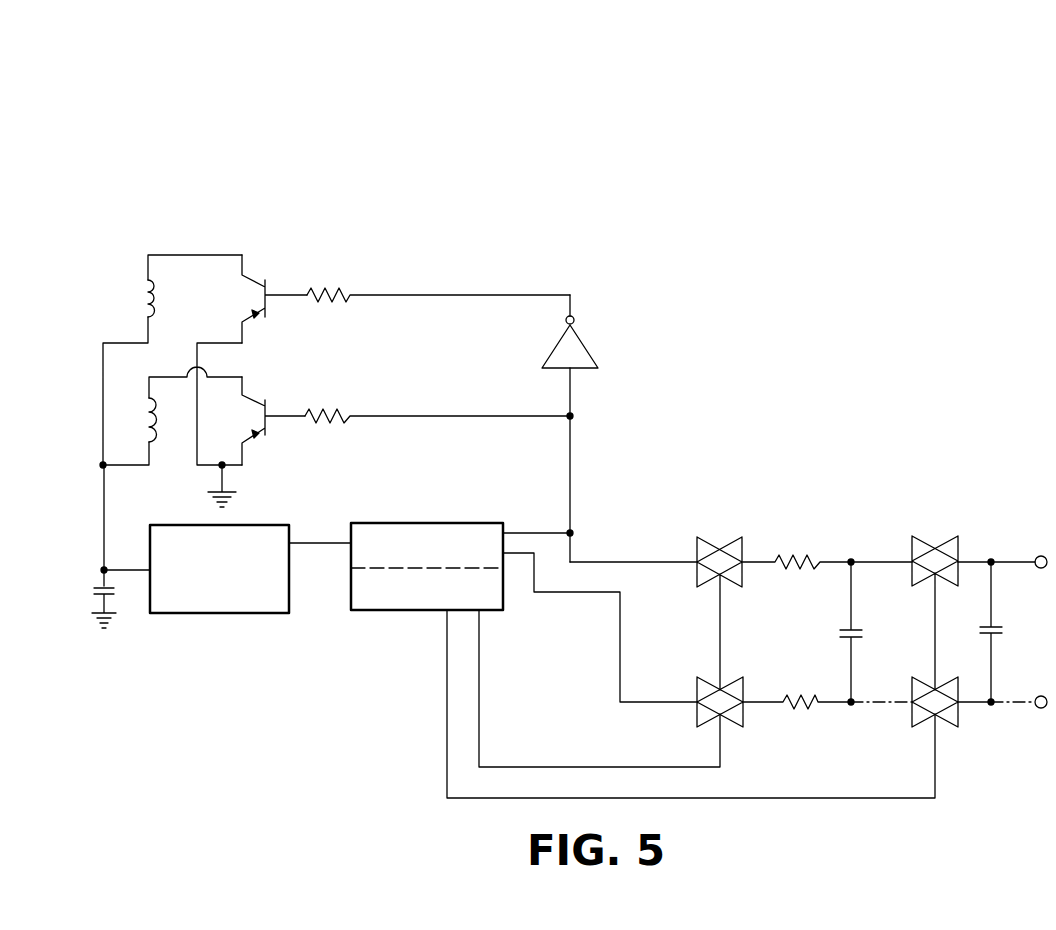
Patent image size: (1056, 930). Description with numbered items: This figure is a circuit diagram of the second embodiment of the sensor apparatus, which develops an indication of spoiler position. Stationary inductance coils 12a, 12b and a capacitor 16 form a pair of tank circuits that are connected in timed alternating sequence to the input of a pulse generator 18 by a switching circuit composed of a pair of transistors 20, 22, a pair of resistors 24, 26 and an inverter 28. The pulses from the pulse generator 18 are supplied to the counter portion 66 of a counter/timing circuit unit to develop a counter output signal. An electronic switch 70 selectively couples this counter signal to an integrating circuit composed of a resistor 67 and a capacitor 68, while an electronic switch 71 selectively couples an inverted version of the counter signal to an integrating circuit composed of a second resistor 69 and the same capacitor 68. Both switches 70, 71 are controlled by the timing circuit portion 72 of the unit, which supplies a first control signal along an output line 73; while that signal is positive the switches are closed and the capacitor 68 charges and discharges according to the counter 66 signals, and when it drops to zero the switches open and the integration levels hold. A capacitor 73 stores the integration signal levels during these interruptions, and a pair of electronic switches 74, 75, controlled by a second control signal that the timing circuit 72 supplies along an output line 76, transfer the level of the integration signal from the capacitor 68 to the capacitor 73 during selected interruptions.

The stationary inductance coil 12a is at (145, 289).
The stationary inductance coil 12b is at (147, 420).
The capacitor 16 is at (98, 585).
The pulse generator 18 is at (250, 525).
The transistor 20 is at (268, 408).
The transistor 22 is at (268, 288).
The resistor 24 is at (326, 412).
The resistor 26 is at (330, 292).
The inverter 28 is at (582, 345).
The counter portion 66 is at (456, 523).
The resistor 67 is at (800, 558).
The capacitor 68 is at (845, 631).
The second resistor 69 is at (800, 705).
The electronic switch 70 is at (727, 540).
The electronic switch 71 is at (708, 677).
The timing circuit portion 72 is at (351, 596).
The capacitor 73 is at (481, 692).
The electronic switch 74 is at (948, 537).
The electronic switch 75 is at (945, 683).
The output line 76 is at (446, 673).